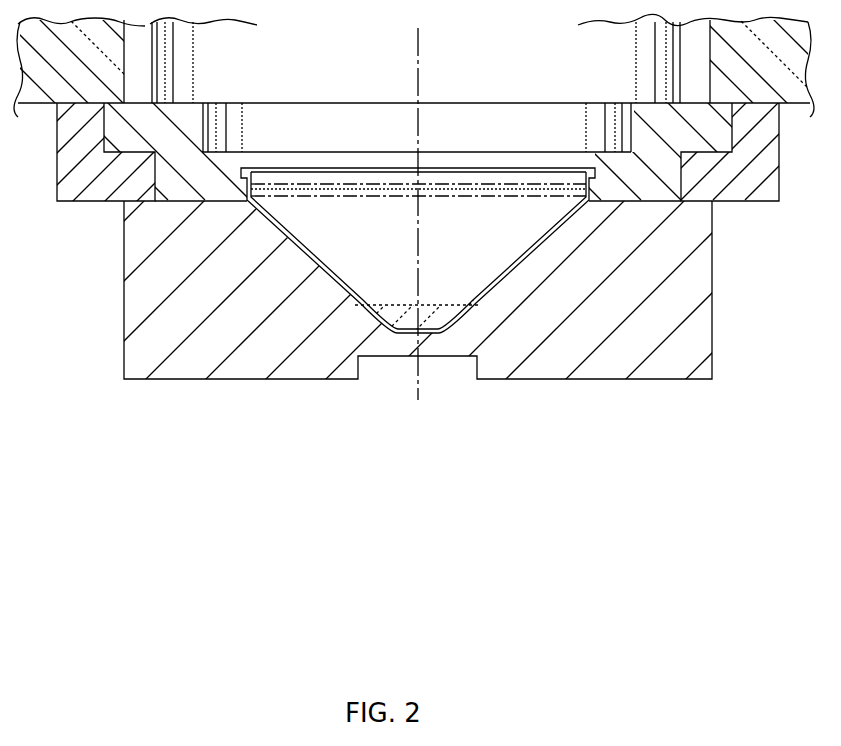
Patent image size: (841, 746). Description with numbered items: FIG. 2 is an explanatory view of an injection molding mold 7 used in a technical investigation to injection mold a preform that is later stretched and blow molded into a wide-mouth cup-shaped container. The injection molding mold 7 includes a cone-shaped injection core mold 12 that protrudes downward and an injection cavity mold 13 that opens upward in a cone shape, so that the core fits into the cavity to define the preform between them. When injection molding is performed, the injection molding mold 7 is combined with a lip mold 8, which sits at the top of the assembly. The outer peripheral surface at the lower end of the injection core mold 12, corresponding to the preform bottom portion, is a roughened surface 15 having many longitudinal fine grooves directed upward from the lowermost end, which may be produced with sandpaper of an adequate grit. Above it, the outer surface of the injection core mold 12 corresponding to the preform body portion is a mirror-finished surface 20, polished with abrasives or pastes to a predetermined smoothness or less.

The injection molding mold 7 is at (124, 316).
The lip mold 8 is at (132, 135).
The injection core mold 12 is at (349, 250).
The injection cavity mold 13 is at (311, 357).
The roughened surface 15 is at (404, 316).
The mirror-finished surface 20 is at (500, 233).